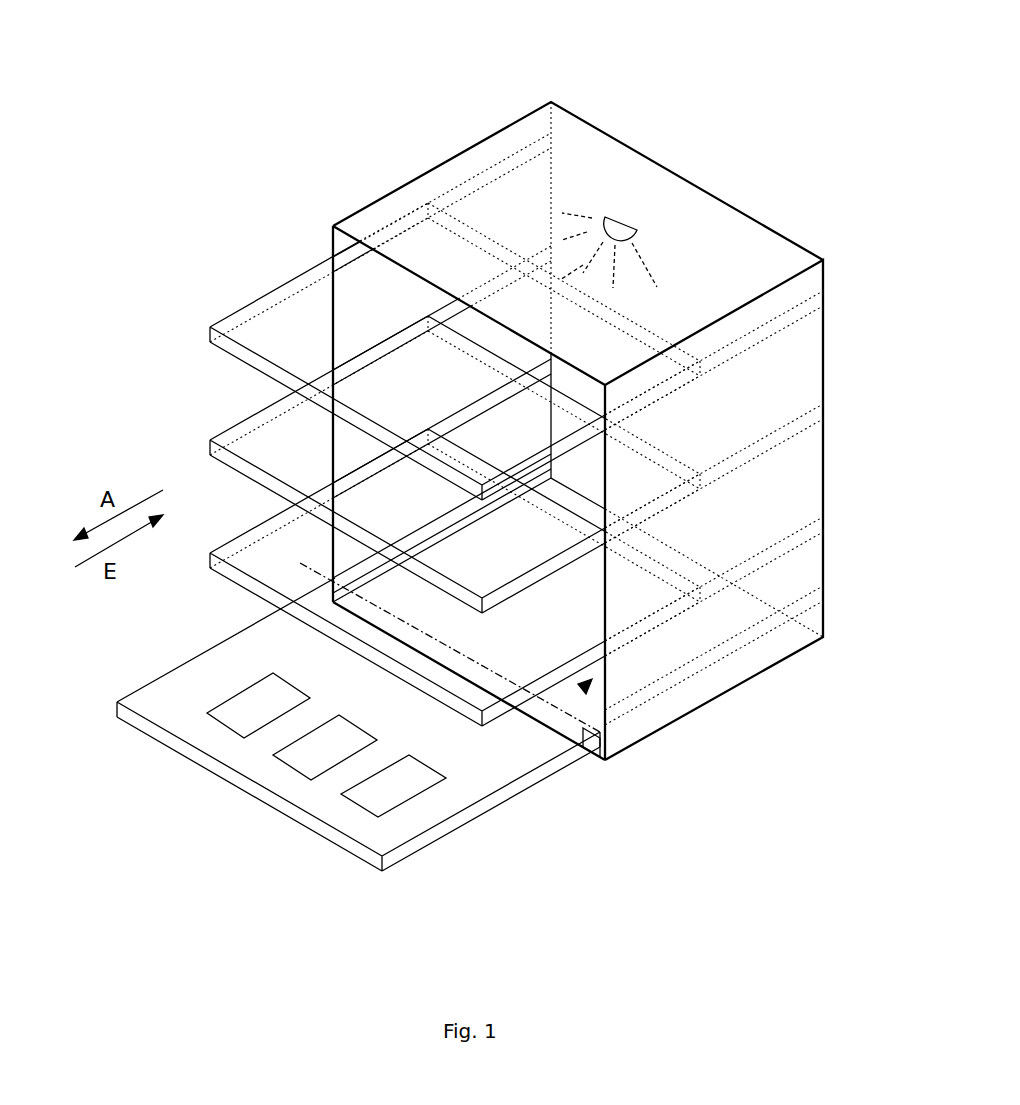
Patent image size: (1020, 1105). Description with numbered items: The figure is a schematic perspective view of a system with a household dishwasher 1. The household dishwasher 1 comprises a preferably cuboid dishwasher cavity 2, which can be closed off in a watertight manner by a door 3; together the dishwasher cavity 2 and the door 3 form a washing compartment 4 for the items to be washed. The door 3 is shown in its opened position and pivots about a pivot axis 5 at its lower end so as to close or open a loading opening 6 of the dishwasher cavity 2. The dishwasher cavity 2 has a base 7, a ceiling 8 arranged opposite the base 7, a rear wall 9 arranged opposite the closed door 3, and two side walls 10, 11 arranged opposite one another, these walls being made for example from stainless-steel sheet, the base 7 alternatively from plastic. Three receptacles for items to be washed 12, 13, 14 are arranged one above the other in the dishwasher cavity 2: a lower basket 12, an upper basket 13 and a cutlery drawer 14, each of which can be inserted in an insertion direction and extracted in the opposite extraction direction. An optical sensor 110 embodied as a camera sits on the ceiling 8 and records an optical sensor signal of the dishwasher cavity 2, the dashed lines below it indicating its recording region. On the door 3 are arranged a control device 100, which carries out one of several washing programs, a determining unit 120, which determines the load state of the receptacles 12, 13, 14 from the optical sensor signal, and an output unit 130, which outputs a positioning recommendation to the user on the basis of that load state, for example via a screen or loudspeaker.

The household dishwasher 1 is at (383, 102).
The dishwasher cavity 2 is at (370, 197).
The door 3 is at (210, 676).
The washing compartment 4 is at (577, 479).
The pivot axis 5 is at (610, 752).
The loading opening 6 is at (583, 686).
The base 7 is at (706, 650).
The ceiling 8 is at (577, 142).
The rear wall 9 is at (762, 244).
The side wall 10 is at (447, 185).
The side wall 11 is at (795, 382).
The receptacle for items to be washed 12 is at (238, 556).
The receptacle for items to be washed 13 is at (240, 450).
The receptacle for items to be washed 14 is at (282, 312).
The control device 100 is at (345, 795).
The optical sensor 110 is at (621, 214).
The determining unit 120 is at (268, 766).
The output unit 130 is at (232, 729).